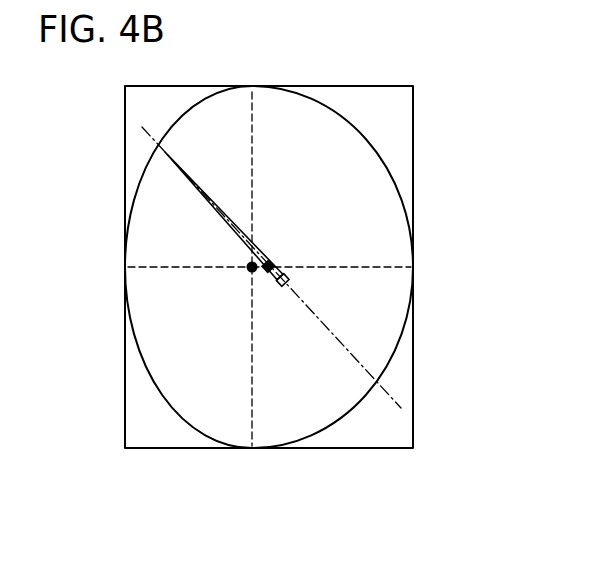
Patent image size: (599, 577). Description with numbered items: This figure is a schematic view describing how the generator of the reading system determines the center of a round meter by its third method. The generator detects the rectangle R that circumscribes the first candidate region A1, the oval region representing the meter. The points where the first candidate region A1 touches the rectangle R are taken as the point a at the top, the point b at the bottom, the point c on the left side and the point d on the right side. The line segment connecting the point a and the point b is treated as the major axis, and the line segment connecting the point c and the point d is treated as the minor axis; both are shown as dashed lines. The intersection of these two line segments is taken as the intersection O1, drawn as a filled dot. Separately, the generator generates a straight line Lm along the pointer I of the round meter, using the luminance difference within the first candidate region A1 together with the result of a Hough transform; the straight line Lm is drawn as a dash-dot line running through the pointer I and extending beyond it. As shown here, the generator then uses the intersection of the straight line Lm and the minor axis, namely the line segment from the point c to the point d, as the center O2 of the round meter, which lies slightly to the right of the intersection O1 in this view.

The rectangle R is at (372, 86).
The first candidate region A1 is at (397, 189).
The pointer I is at (212, 208).
The straight line Lm is at (352, 356).
The intersection O1 is at (249, 272).
The center of the round meter O2 is at (265, 272).
The point a is at (253, 158).
The point b is at (261, 376).
The point c is at (175, 268).
The point d is at (346, 268).